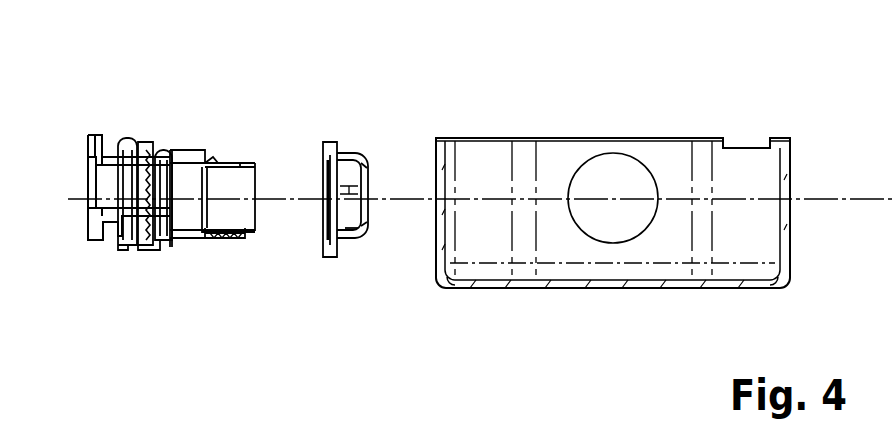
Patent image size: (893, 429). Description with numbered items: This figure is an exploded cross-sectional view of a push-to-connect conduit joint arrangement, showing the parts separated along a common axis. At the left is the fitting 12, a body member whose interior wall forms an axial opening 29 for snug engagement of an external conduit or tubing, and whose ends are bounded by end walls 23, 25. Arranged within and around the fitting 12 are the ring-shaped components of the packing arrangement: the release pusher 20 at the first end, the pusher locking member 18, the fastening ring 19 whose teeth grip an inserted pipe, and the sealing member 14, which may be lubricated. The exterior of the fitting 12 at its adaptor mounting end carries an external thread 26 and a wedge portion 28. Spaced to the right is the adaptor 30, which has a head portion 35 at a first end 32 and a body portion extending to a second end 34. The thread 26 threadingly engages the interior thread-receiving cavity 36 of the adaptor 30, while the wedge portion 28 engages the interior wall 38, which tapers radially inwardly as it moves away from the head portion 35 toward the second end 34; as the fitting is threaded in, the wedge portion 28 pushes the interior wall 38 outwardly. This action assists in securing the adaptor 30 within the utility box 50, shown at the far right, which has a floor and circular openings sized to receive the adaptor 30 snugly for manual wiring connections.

The fitting 12 is at (188, 120).
The sealing member 14 is at (162, 242).
The pusher locking member 18 is at (127, 250).
The fastening ring 19 is at (143, 165).
The release pusher 20 is at (94, 138).
The end wall 23 is at (117, 248).
The end wall 25 is at (253, 168).
The external thread 26 is at (227, 242).
The wedge portion 28 is at (260, 147).
The axial opening 29 is at (98, 193).
The adaptor 30 is at (358, 125).
The first end 32 is at (318, 257).
The second end 34 is at (372, 258).
The head portion 35 is at (328, 142).
The thread-receiving cavity 36 is at (318, 225).
The interior wall 38 is at (360, 222).
The box 50 is at (692, 122).